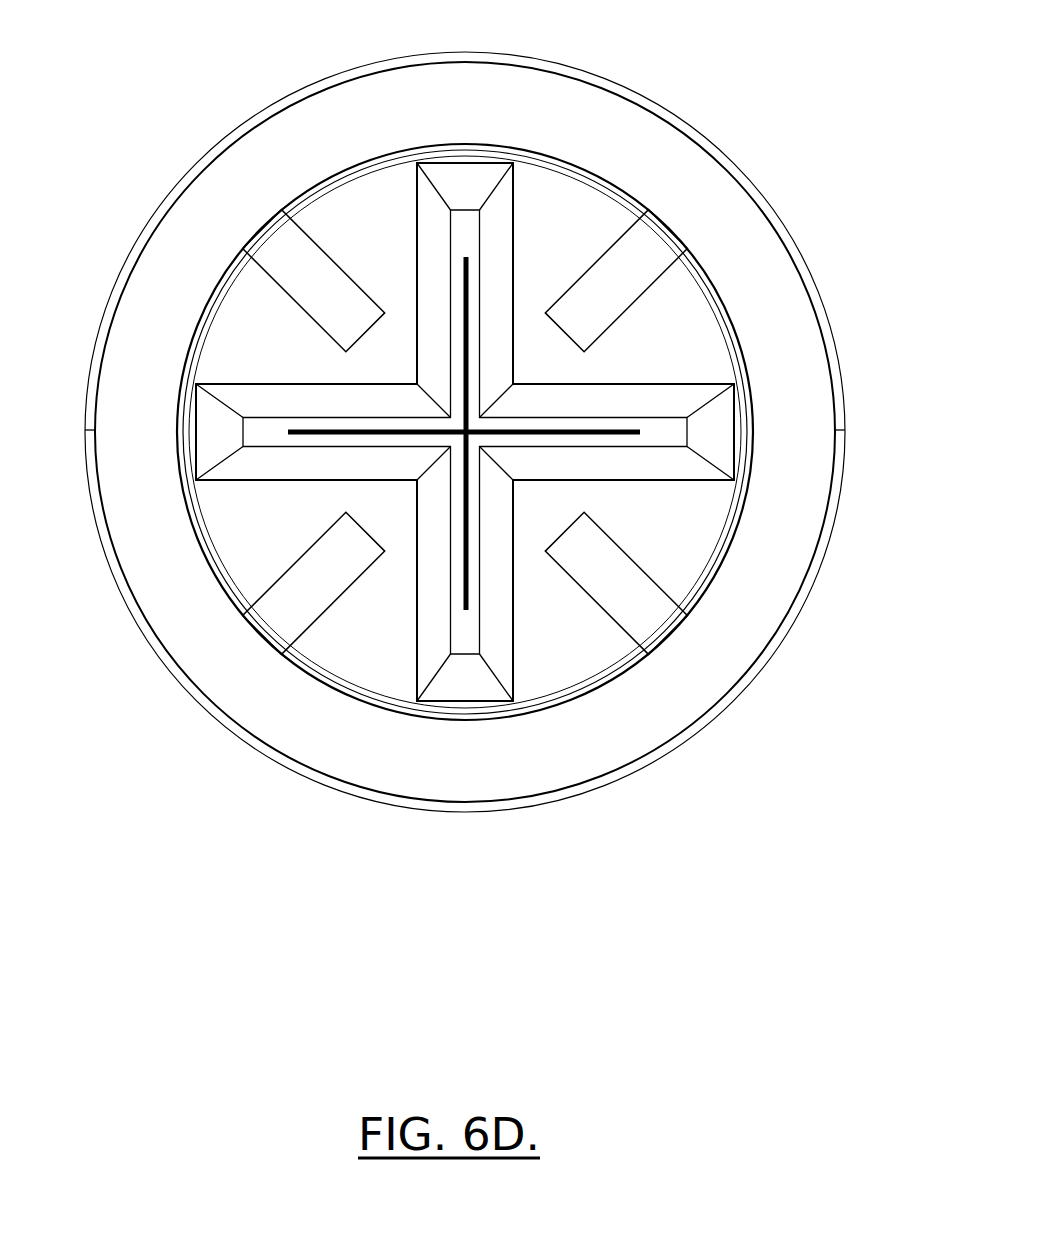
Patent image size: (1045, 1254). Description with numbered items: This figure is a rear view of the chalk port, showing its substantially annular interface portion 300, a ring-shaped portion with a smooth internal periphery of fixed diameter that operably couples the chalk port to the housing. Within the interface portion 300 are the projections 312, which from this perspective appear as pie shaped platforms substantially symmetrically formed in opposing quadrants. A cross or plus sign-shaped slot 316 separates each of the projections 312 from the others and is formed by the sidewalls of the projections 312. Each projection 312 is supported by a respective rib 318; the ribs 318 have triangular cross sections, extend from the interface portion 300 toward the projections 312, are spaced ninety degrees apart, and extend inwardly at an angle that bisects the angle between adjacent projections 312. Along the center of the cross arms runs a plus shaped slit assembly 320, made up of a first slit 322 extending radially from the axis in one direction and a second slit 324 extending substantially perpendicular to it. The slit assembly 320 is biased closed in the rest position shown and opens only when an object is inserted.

The interface portion 300 is at (498, 432).
The projections 312 is at (386, 416).
The slot 316 is at (385, 432).
The ribs 318 is at (453, 450).
The slit assembly 320 is at (465, 500).
The first slit 322 is at (414, 310).
The second slit 324 is at (607, 377).